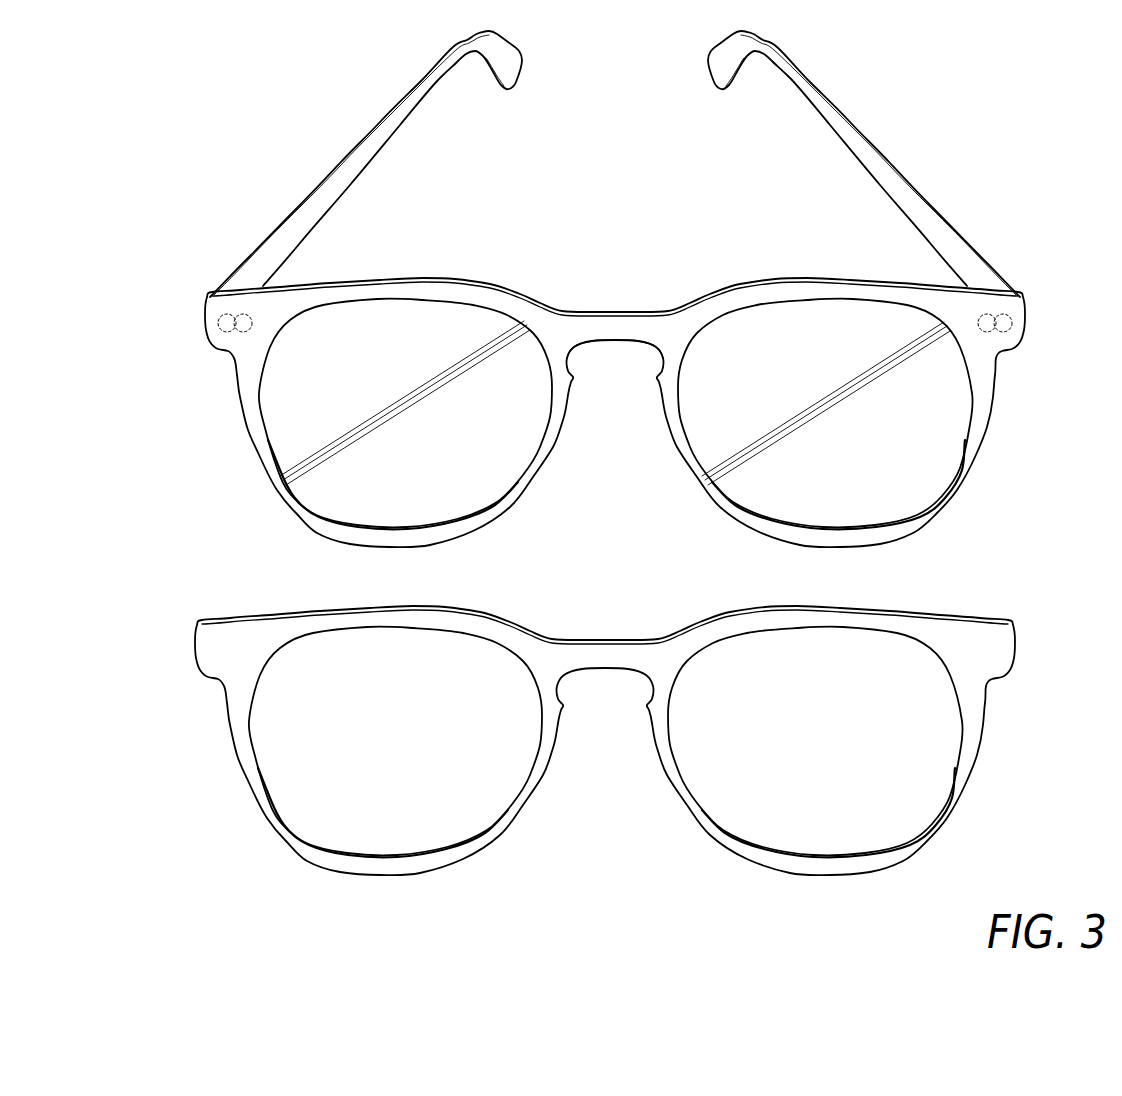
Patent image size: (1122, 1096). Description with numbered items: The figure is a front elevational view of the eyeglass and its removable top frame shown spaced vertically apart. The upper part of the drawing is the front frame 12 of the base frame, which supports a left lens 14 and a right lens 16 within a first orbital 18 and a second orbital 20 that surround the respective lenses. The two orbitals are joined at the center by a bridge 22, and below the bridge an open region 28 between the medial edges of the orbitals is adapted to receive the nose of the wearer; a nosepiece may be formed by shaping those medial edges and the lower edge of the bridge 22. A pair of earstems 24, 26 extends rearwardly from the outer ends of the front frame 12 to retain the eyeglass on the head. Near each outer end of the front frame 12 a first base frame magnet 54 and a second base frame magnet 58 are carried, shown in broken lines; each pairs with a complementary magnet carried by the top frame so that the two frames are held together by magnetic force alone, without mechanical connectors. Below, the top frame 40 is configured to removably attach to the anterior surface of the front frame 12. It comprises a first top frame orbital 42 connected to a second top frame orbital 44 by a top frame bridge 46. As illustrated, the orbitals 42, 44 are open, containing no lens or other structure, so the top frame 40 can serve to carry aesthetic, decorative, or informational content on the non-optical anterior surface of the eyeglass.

The front frame 12 is at (592, 289).
The left lens 14 is at (947, 400).
The right lens 16 is at (285, 400).
The first orbital 18 is at (945, 497).
The second orbital 20 is at (290, 497).
The bridge 22 is at (610, 330).
The earstem 24 is at (888, 180).
The earstem 26 is at (345, 180).
The open region 28 is at (618, 440).
The top frame 40 is at (560, 713).
The first top frame orbital 42 is at (853, 821).
The second top frame orbital 44 is at (361, 821).
The top frame bridge 46 is at (605, 713).
The first base frame magnet 54 is at (218, 322).
The second base frame magnet 58 is at (1012, 330).